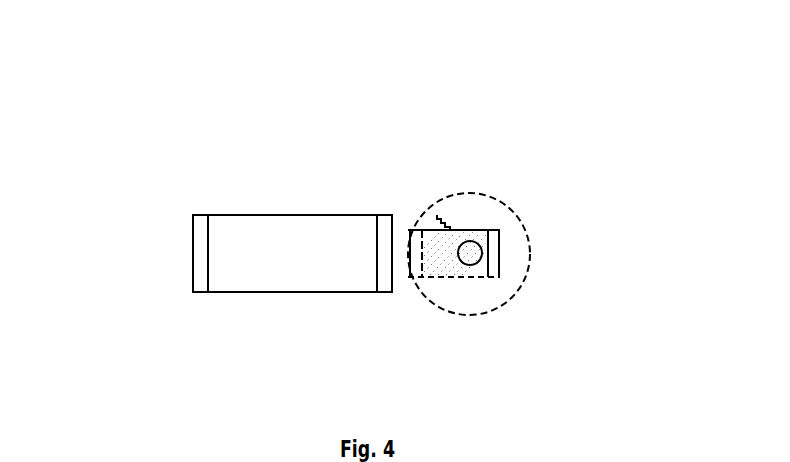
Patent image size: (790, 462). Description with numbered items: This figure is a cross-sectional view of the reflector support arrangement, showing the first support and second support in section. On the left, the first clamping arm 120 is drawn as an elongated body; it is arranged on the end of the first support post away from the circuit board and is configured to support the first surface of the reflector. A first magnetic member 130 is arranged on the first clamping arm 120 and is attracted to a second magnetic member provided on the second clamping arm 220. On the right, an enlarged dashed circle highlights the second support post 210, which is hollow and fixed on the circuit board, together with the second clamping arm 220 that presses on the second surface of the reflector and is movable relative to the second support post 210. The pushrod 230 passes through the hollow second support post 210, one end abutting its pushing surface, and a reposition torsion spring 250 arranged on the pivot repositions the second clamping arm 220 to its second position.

The first clamping arm 120 is at (193, 240).
The first magnetic member 130 is at (263, 232).
The second support post 210 is at (480, 188).
The second clamping arm 220 is at (436, 258).
The pushrod 230 is at (468, 243).
The reposition torsion spring 250 is at (437, 215).